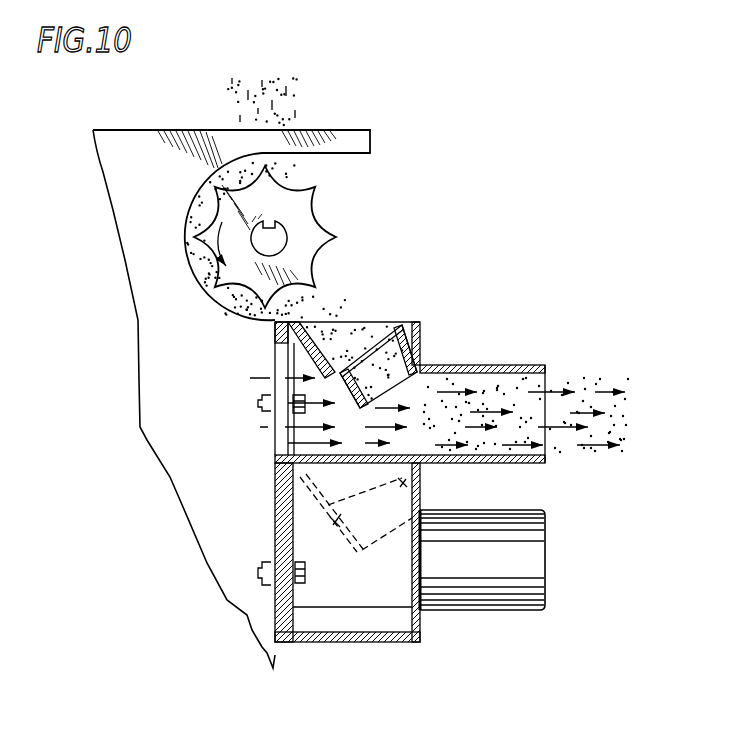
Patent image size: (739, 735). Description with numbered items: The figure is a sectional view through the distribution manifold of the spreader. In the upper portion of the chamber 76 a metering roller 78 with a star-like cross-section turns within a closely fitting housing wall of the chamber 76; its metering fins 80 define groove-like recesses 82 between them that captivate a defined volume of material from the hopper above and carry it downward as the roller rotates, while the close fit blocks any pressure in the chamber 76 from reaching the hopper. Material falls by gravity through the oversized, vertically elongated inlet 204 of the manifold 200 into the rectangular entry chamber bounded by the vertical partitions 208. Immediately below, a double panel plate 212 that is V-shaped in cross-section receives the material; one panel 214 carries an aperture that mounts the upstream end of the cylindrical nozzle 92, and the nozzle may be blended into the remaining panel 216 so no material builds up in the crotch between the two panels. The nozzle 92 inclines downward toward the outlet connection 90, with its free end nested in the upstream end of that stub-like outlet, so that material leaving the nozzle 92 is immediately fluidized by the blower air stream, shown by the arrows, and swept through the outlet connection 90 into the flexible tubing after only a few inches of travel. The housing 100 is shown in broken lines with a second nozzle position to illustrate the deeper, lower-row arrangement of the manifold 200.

The chamber 76 is at (375, 298).
The metering roller 78 is at (325, 203).
The metering fins 80 is at (213, 215).
The groove-like recesses 82 is at (190, 268).
The outlet connections 90 is at (547, 463).
The nozzle 92 is at (305, 486).
The distributor housing 100 is at (398, 317).
The manifold 200 is at (273, 467).
The inlets 204 is at (273, 348).
The vertical partitions 208 is at (392, 602).
The double panel plate 212 is at (324, 540).
The panel 214 is at (367, 350).
The panel 216 is at (302, 340).